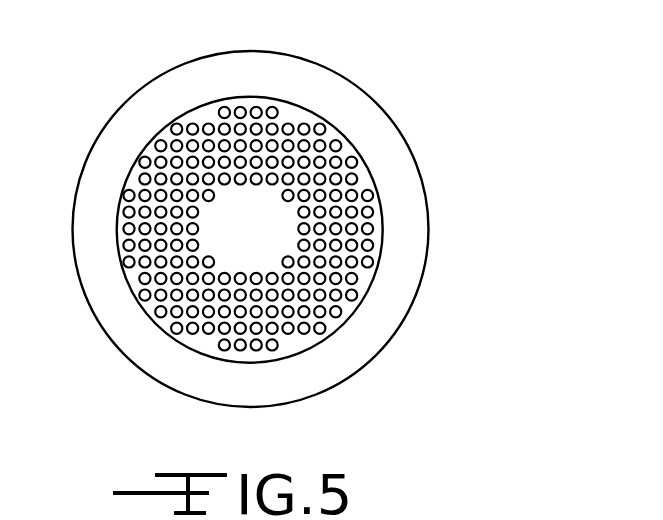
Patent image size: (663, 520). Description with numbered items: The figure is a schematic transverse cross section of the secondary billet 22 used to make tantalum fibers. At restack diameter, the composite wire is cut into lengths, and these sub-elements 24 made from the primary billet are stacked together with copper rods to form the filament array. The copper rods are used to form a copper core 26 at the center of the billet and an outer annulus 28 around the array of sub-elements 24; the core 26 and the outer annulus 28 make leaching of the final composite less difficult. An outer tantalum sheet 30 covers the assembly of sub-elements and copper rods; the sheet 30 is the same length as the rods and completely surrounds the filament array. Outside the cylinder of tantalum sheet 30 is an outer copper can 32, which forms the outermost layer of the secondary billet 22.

The secondary billet 22 is at (438, 60).
The sub-elements 24 is at (275, 110).
The copper core 26 is at (248, 223).
The outer annulus 28 is at (378, 222).
The outer tantalum sheet 30 is at (373, 291).
The outer copper can 32 is at (373, 356).